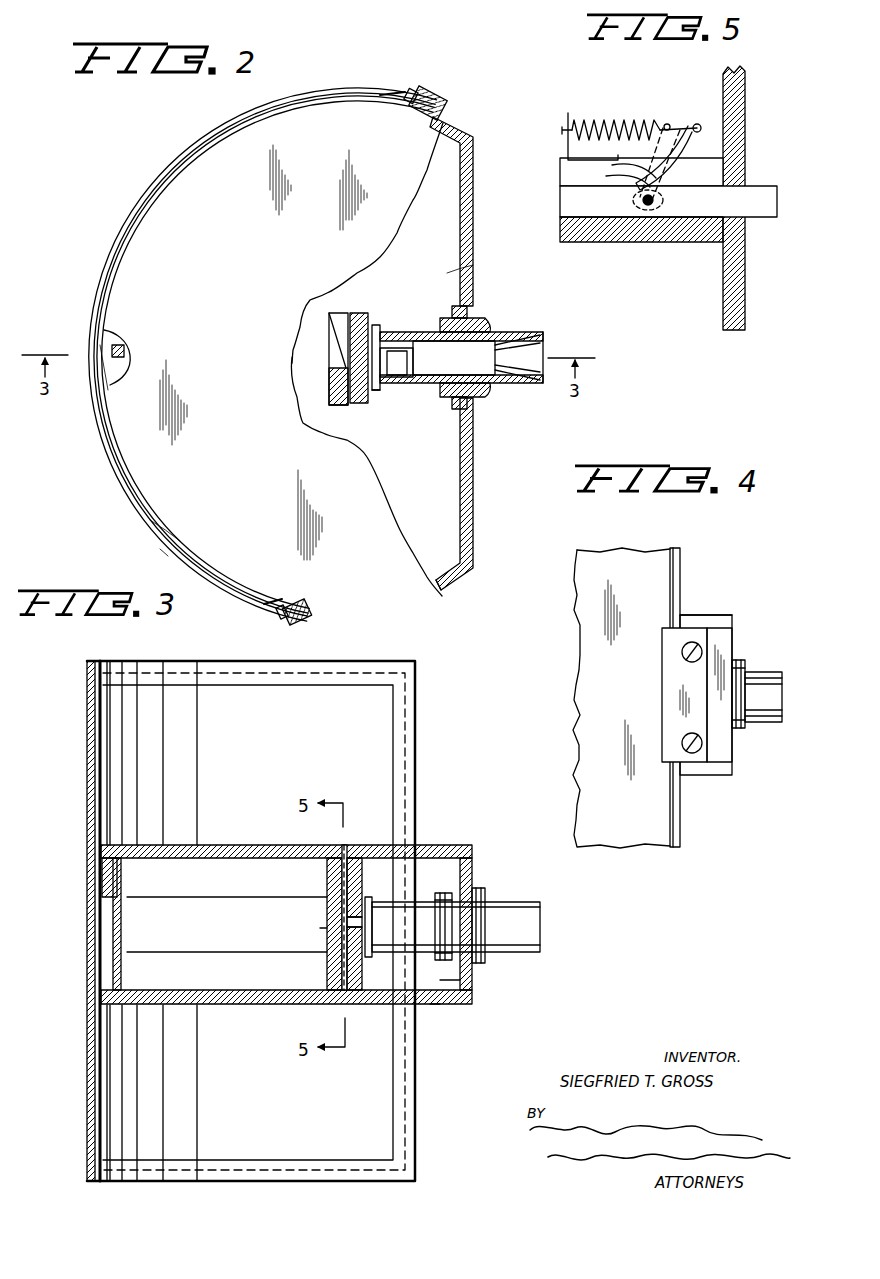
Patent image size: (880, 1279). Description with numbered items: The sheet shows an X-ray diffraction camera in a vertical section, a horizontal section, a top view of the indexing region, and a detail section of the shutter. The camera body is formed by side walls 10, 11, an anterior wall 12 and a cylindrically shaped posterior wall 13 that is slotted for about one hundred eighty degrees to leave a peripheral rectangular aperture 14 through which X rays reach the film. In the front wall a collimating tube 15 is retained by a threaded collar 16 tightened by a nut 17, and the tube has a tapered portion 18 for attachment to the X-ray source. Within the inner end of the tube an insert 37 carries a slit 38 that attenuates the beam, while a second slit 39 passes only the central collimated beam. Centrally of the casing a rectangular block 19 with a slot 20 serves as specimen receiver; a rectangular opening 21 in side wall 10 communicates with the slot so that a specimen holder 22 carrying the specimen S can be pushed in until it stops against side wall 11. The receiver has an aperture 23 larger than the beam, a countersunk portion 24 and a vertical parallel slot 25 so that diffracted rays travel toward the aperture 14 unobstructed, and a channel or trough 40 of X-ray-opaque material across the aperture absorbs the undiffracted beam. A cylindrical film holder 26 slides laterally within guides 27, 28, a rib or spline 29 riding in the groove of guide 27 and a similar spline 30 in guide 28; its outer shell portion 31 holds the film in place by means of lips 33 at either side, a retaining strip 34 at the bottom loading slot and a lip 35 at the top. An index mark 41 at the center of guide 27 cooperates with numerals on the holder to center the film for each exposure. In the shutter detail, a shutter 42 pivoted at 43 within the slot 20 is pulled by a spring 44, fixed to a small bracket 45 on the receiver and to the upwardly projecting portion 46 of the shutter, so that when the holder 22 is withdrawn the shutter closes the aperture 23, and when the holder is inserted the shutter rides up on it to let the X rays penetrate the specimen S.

In FIG. 2, the side wall 10 is at (240, 250).
In FIG. 5, the side wall 10 is at (746, 137).
In FIG. 4, the side wall 10 is at (714, 776).
In FIG. 3, the side wall 10 is at (440, 846).
In FIG. 2, the side wall 11 is at (447, 274).
In FIG. 4, the side wall 11 is at (725, 618).
In FIG. 3, the side wall 11 is at (440, 1005).
In FIG. 2, the anterior wall 12 is at (475, 216).
In FIG. 3, the anterior wall 12 is at (474, 872).
In FIG. 2, the posterior wall 13 is at (443, 590).
In FIG. 4, the posterior wall 13 is at (726, 640).
In FIG. 3, the posterior wall 13 is at (443, 982).
In FIG. 2, the aperture 14 is at (108, 388).
In FIG. 3, the aperture 14 is at (236, 931).
In FIG. 2, the collimating tube 15 is at (515, 333).
In FIG. 4, the collimating tube 15 is at (758, 723).
In FIG. 3, the collimating tube 15 is at (522, 905).
In FIG. 2, the threaded collar 16 is at (481, 396).
In FIG. 4, the threaded collar 16 is at (742, 730).
In FIG. 3, the threaded collar 16 is at (487, 960).
In FIG. 2, the nut 17 is at (458, 402).
In FIG. 2, the tapered portion 18 is at (524, 368).
In FIG. 2, the rectangular block 19 is at (374, 326).
In FIG. 5, the rectangular block 19 is at (696, 240).
In FIG. 3, the rectangular block 19 is at (362, 885).
In FIG. 2, the slot 20 is at (357, 313).
In FIG. 5, the slot 20 is at (590, 172).
In FIG. 3, the slot 20 is at (330, 868).
In FIG. 3, the rectangular opening 21 is at (345, 846).
In FIG. 5, the specimen holder 22 is at (762, 213).
In FIG. 2, the aperture 23 is at (350, 363).
In FIG. 3, the aperture 23 is at (353, 930).
In FIG. 3, the countersunk portion 24 is at (325, 930).
In FIG. 2, the parallel slot 25 is at (338, 313).
In FIG. 2, the film holder 26 is at (125, 514).
In FIG. 4, the film holder 26 is at (610, 556).
In FIG. 3, the film holder 26 is at (251, 921).
In FIG. 2, the guide 27 is at (442, 104).
In FIG. 4, the guide 27 is at (690, 630).
In FIG. 2, the guide 28 is at (306, 617).
In FIG. 2, the rib or spline 29 is at (414, 92).
In FIG. 4, the rib or spline 29 is at (683, 566).
In FIG. 2, the spline 30 is at (278, 620).
In FIG. 2, the outer shell portion 31 is at (176, 555).
In FIG. 2, the lips 33 is at (178, 542).
In FIG. 2, the retaining strip 34 is at (267, 606).
In FIG. 2, the lip 35 is at (392, 95).
In FIG. 2, the insert 37 is at (396, 380).
In FIG. 2, the slit 38 is at (414, 375).
In FIG. 2, the second slit 39 is at (388, 350).
In FIG. 2, the channel or trough 40 is at (127, 338).
In FIG. 3, the channel or trough 40 is at (122, 941).
In FIG. 4, the index mark 41 is at (664, 697).
In FIG. 5, the shutter 42 is at (626, 177).
In FIG. 5, the pivot 43 is at (700, 163).
In FIG. 5, the spring 44 is at (630, 121).
In FIG. 5, the bracket 45 is at (569, 113).
In FIG. 5, the upwardly projecting portion 46 is at (700, 124).
In FIG. 5, the specimen S is at (660, 200).